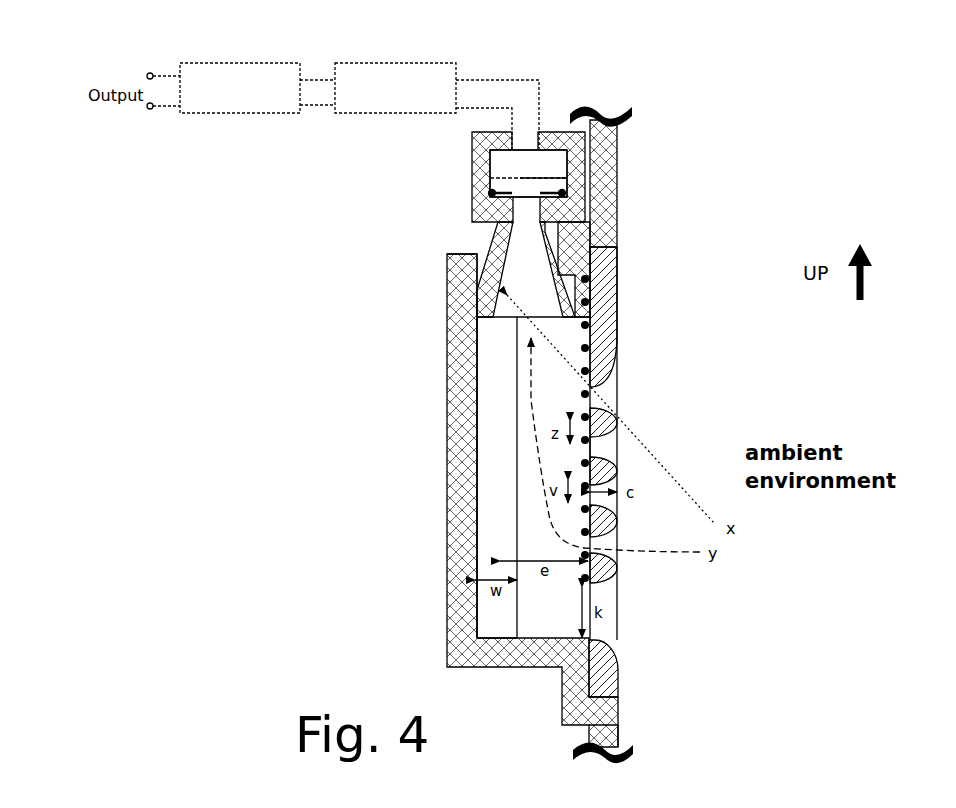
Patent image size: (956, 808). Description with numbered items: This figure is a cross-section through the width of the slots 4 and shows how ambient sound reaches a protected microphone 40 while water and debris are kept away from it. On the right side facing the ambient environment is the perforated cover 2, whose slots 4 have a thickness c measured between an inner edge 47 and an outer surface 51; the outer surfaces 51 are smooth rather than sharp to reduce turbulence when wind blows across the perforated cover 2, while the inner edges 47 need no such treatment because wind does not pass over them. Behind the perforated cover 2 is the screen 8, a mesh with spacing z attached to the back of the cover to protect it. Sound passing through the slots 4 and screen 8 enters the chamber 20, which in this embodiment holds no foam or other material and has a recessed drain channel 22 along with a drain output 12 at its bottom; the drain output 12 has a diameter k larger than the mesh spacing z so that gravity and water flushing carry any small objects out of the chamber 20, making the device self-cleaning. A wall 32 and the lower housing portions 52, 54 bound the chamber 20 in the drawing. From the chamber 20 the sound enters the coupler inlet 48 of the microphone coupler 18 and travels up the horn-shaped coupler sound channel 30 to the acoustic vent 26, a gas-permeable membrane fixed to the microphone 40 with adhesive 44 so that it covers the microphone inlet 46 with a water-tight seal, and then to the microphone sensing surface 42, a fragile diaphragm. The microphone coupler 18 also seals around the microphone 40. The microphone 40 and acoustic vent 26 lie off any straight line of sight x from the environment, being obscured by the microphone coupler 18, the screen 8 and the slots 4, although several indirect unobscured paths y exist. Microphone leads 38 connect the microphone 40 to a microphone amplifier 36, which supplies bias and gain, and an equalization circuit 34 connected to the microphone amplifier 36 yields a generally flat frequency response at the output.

The perforated cover 2 is at (622, 680).
The slots 4 is at (612, 450).
The screen 8 is at (593, 333).
The drain output 12 is at (598, 623).
The microphone coupler 18 is at (473, 183).
The chamber 20 is at (532, 532).
The drain channel 22 is at (493, 610).
The acoustic vent 26 is at (597, 223).
The coupler sound channel 30 is at (522, 285).
The housing side wall 32 is at (447, 397).
The equalization circuit 34 is at (270, 63).
The microphone amplifier 36 is at (398, 63).
The microphone leads 38 is at (546, 97).
The microphone 40 is at (570, 153).
The microphone sensing surface 42 is at (507, 178).
The adhesive 44 is at (490, 203).
The microphone inlet 46 is at (538, 185).
The inner edge 47 is at (594, 405).
The coupler inlet 48 is at (507, 317).
The outer surface 51 is at (618, 477).
The inner wall surface 52 is at (477, 468).
The housing bottom 54 is at (618, 717).